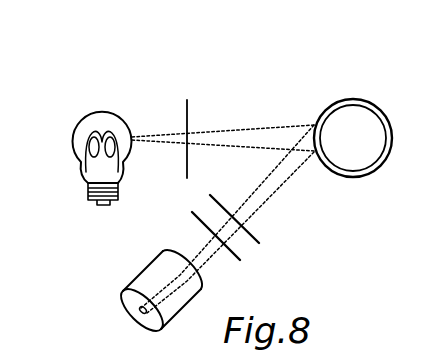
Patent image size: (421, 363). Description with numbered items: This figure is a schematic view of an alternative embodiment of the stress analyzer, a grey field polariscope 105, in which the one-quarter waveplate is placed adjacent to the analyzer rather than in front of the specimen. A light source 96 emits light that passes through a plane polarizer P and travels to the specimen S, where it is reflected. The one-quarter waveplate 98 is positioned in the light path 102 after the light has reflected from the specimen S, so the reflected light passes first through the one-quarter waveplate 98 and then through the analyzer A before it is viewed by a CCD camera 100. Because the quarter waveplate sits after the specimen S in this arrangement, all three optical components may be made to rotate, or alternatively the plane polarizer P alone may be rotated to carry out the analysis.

The light source 96 is at (108, 112).
The plane polarizer P is at (187, 127).
The specimen S is at (383, 112).
The one-quarter waveplate 98 is at (225, 207).
The analyzer A is at (223, 243).
The CCD camera 100 is at (134, 283).
The light path 102 is at (284, 181).
The grey field polariscope 105 is at (313, 248).